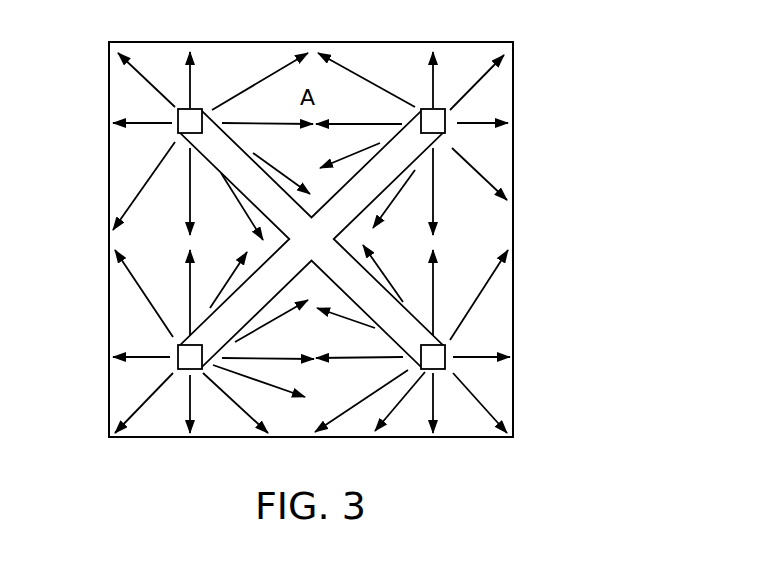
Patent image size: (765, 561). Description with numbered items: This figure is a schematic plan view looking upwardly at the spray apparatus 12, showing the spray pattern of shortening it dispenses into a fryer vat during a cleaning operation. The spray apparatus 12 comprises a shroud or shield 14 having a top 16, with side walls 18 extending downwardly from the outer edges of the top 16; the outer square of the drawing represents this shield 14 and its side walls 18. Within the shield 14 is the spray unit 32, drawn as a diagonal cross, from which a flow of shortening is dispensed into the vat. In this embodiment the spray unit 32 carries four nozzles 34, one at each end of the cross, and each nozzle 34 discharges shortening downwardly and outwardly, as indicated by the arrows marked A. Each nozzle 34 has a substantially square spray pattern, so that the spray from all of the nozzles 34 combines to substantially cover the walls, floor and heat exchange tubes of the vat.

The spray apparatus 12 is at (554, 51).
The shroud or shield 14 is at (517, 230).
The top 16 is at (498, 152).
The side walls 18 is at (108, 238).
The spray unit 32 is at (402, 337).
The nozzles 34 is at (188, 355).